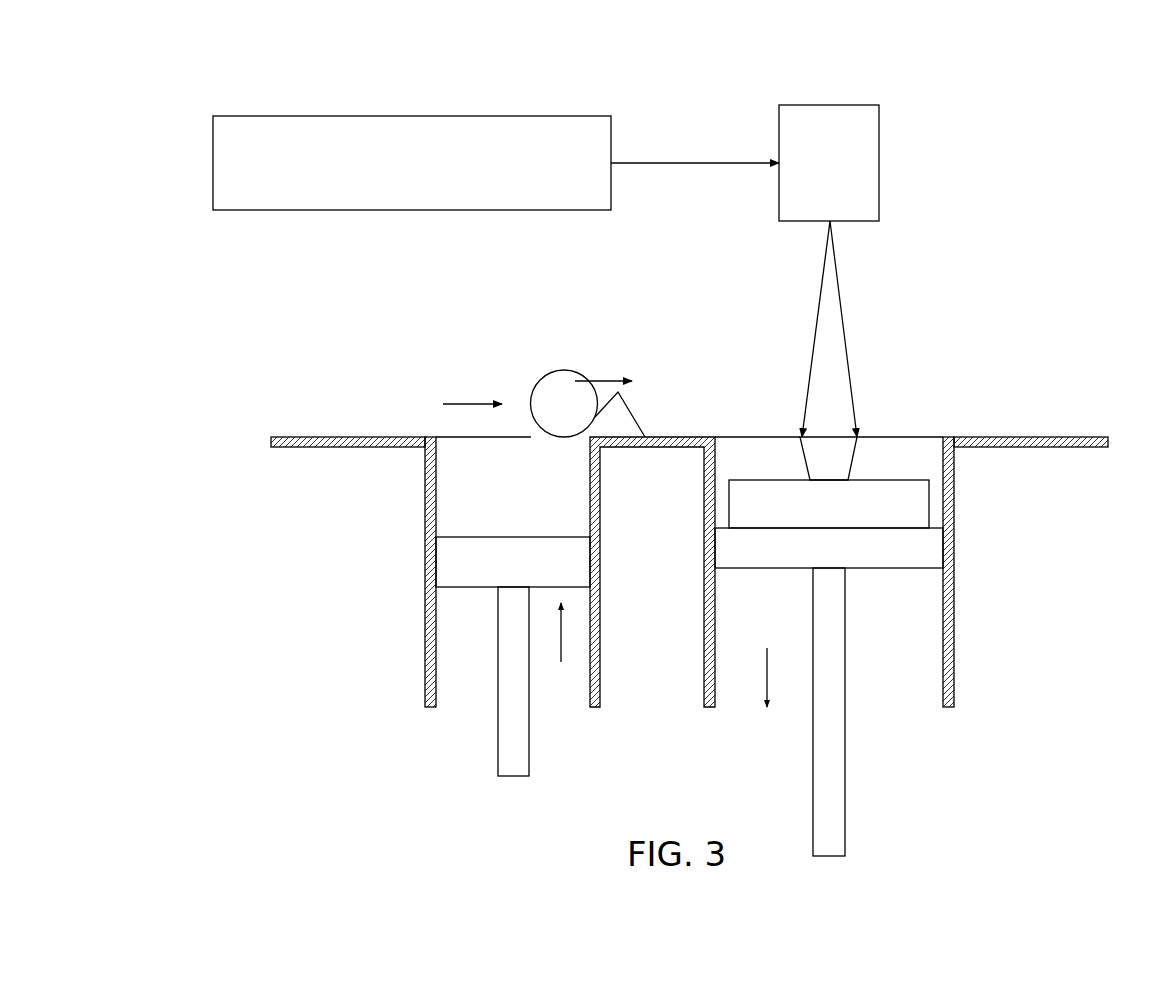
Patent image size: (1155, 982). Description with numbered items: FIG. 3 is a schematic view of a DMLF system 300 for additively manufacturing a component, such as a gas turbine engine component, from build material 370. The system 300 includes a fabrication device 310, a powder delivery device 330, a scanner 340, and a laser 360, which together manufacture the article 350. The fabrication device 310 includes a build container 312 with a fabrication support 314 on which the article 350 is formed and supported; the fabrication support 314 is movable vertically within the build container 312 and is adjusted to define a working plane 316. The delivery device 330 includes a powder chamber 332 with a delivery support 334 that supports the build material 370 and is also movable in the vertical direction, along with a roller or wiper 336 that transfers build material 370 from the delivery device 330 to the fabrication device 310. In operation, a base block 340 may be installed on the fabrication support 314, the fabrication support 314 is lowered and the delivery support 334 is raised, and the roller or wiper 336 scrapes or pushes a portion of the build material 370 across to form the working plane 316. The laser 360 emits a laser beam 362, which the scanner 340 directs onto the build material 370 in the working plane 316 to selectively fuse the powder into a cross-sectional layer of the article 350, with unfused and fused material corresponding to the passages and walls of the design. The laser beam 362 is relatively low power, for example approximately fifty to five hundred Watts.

The DMLF system 300 is at (1007, 128).
The fabrication device 310 is at (985, 580).
The build container 312 is at (952, 467).
The fabrication support 314 is at (897, 570).
The working plane 316 is at (921, 440).
The powder delivery device 330 is at (343, 551).
The powder chamber 332 is at (427, 500).
The delivery support 334 is at (447, 560).
The roller or wiper 336 is at (560, 370).
The scanner 340 is at (828, 105).
The article 350 is at (790, 437).
The laser 360 is at (418, 116).
The laser beam 362 is at (697, 162).
The build material 370 is at (447, 476).